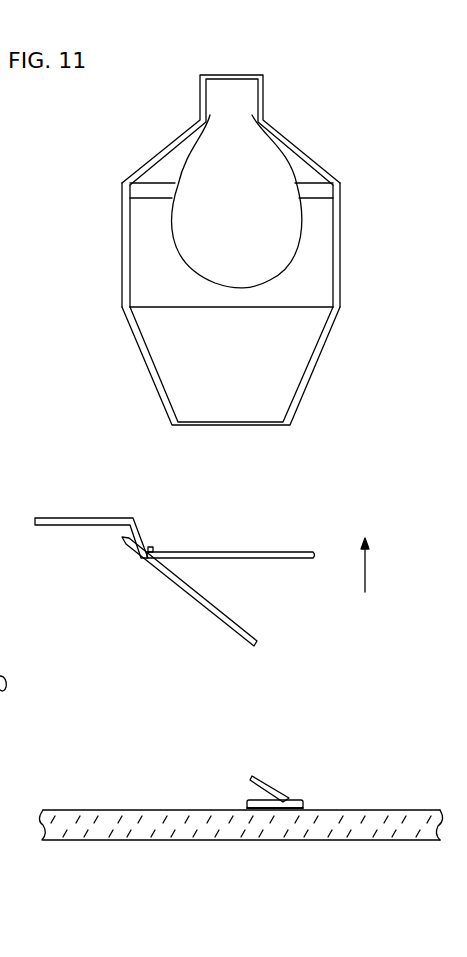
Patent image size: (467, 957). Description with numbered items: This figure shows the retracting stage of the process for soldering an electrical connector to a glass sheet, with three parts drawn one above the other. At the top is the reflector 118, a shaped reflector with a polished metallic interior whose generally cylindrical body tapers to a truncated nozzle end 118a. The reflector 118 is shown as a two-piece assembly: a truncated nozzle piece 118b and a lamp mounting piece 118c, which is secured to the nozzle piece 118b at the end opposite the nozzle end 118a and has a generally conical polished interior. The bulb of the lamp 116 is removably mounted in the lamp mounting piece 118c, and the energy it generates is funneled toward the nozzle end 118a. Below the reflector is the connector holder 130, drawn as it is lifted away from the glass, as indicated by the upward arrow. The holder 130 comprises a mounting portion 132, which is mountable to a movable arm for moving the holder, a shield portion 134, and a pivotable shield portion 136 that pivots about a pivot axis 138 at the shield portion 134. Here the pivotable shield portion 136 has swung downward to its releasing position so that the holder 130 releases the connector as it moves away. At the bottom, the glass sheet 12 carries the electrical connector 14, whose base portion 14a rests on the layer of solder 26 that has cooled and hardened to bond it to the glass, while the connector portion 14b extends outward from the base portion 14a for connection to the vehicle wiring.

The reflector 118 is at (334, 120).
The nozzle end 118a is at (295, 411).
The nozzle piece 118b is at (122, 307).
The lamp mounting piece 118c is at (163, 150).
The lamp 116 is at (290, 230).
The connector holder 130 is at (318, 526).
The mounting portion 132 is at (70, 517).
The shield portion 134 is at (305, 560).
The pivotable shield portion 136 is at (209, 610).
The pivot axis 138 is at (153, 546).
The glass sheet 12 is at (137, 820).
The layer of solder 26 is at (247, 808).
The electrical connector 14 is at (293, 780).
The base portion 14a is at (303, 800).
The connector portion 14b is at (255, 775).